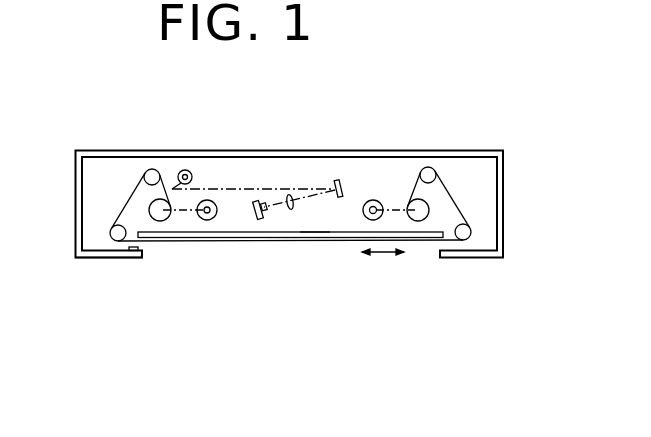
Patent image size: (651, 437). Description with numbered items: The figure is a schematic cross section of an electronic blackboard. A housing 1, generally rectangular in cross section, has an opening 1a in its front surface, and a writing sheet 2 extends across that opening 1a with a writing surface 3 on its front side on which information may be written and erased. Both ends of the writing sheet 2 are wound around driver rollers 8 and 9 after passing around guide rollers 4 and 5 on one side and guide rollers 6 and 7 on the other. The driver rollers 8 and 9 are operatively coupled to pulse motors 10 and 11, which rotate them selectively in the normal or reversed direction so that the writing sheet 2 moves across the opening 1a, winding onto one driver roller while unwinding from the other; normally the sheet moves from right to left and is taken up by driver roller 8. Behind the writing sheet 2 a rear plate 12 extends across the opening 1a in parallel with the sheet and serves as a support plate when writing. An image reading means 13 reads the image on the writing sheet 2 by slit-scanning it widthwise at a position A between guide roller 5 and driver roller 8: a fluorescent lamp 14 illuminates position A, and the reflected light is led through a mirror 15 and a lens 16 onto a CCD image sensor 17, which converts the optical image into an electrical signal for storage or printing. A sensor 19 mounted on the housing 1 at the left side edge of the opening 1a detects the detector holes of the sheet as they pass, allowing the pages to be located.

The housing 1 is at (283, 150).
The opening 1a is at (143, 257).
The writing sheet 2 is at (239, 238).
The writing surface 3 is at (317, 238).
The guide roller 4 is at (115, 241).
The guide roller 5 is at (147, 170).
The guide roller 6 is at (465, 240).
The guide roller 7 is at (429, 168).
The driver roller 8 is at (162, 221).
The driver roller 9 is at (409, 200).
The pulse motor 10 is at (207, 220).
The pulse motor 11 is at (365, 200).
The rear plate 12 is at (349, 240).
The image reading means 13 is at (239, 188).
The fluorescent lamp 14 is at (182, 170).
The mirror 15 is at (339, 179).
The lens 16 is at (292, 210).
The CCD image sensor 17 is at (259, 219).
The sensor 19 is at (132, 252).
The position A is at (166, 176).